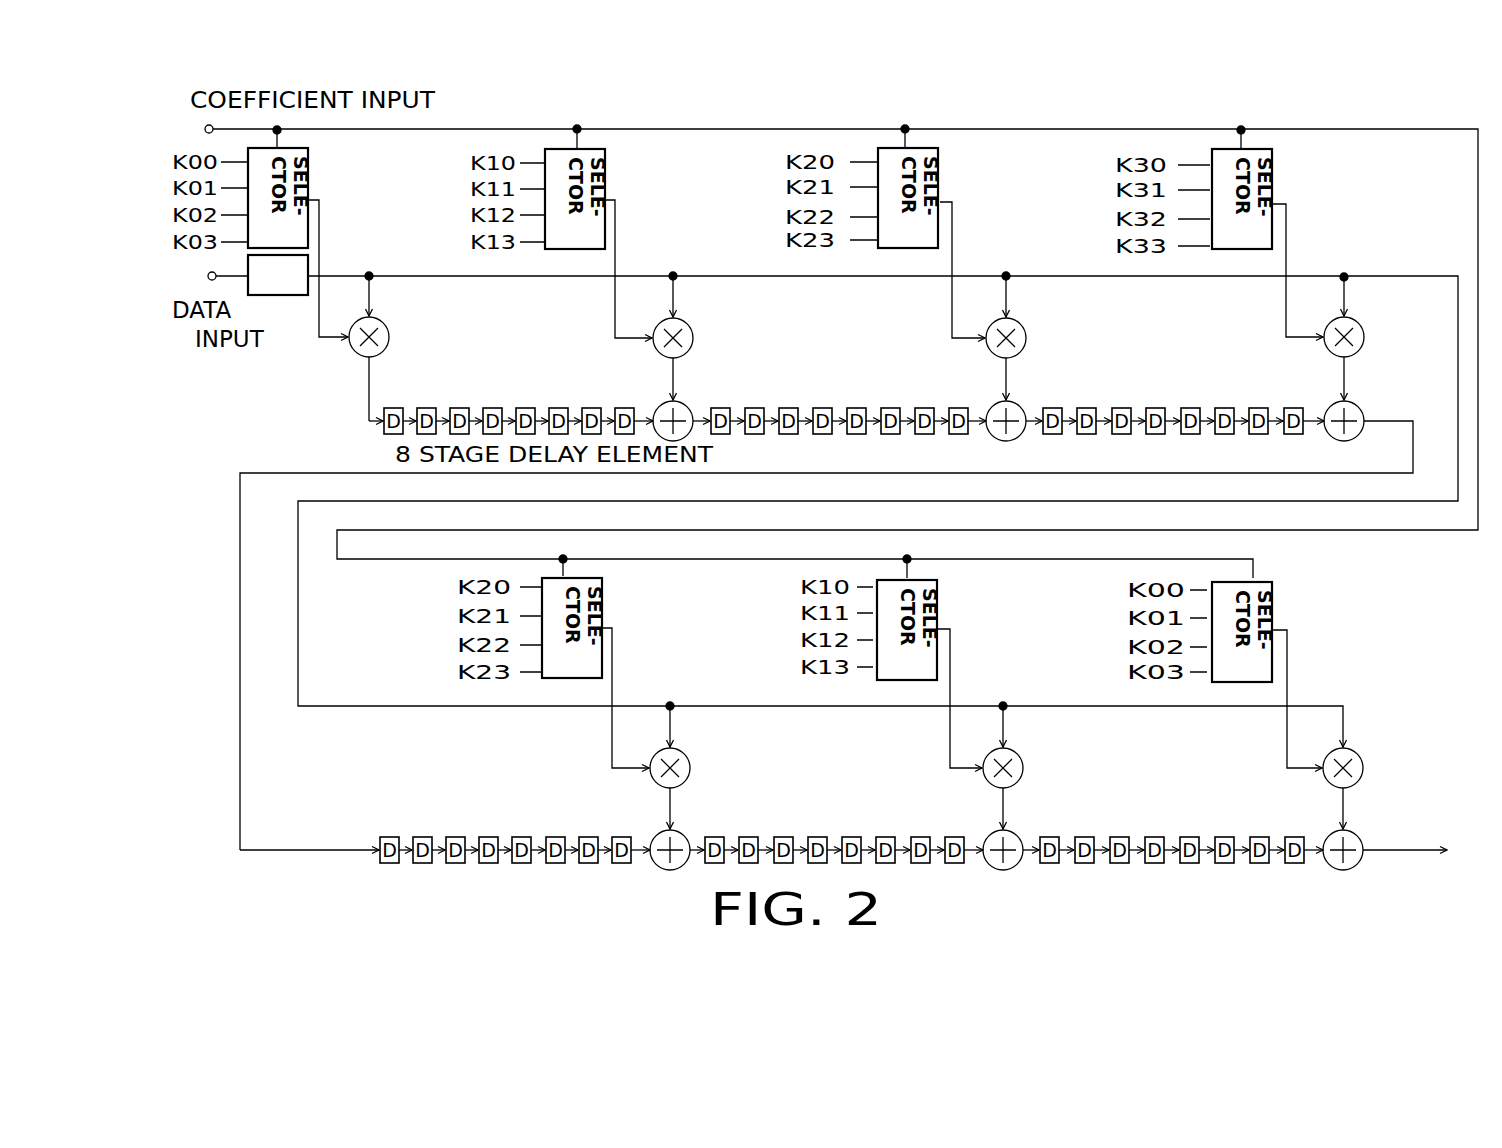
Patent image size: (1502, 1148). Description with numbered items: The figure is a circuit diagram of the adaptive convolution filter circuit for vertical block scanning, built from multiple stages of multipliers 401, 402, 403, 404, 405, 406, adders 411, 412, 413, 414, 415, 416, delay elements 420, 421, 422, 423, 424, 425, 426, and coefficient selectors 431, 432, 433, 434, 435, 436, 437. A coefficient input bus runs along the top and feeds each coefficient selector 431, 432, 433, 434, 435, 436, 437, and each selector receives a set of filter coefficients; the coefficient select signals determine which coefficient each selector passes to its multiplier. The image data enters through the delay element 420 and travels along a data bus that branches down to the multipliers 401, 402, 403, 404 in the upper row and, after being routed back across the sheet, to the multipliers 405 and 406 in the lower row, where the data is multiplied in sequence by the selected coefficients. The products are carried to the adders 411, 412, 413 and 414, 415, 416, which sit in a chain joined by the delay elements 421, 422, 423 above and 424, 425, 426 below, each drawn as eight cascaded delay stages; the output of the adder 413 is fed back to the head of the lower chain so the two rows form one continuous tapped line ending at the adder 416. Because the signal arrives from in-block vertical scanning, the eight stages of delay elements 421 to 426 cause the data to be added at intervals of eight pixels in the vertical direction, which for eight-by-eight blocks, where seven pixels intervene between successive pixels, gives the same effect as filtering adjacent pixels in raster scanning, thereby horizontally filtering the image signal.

The multiplier 401 is at (390, 338).
The multiplier 402 is at (695, 338).
The multiplier 403 is at (1027, 338).
The multiplier 404 is at (1365, 337).
The multiplier 405 is at (690, 760).
The multiplier 406 is at (1022, 760).
The adder 411 is at (686, 405).
The adder 412 is at (1019, 405).
The adder 413 is at (1358, 405).
The adder 414 is at (684, 835).
The adder 415 is at (1017, 835).
The adder 416 is at (1357, 835).
The delay element 420 is at (287, 295).
The eight-stage delay element 421 is at (392, 403).
The eight-stage delay element 422 is at (960, 405).
The eight-stage delay element 423 is at (1298, 405).
The eight-stage delay element 424 is at (628, 827).
The eight-stage delay element 425 is at (958, 828).
The eight-stage delay element 426 is at (1300, 831).
The coefficient selector 431 is at (308, 178).
The coefficient selector 432 is at (605, 180).
The coefficient selector 433 is at (940, 178).
The coefficient selector 434 is at (1272, 180).
The coefficient selector 435 is at (602, 618).
The coefficient selector 436 is at (937, 618).
The coefficient selector 437 is at (1272, 622).